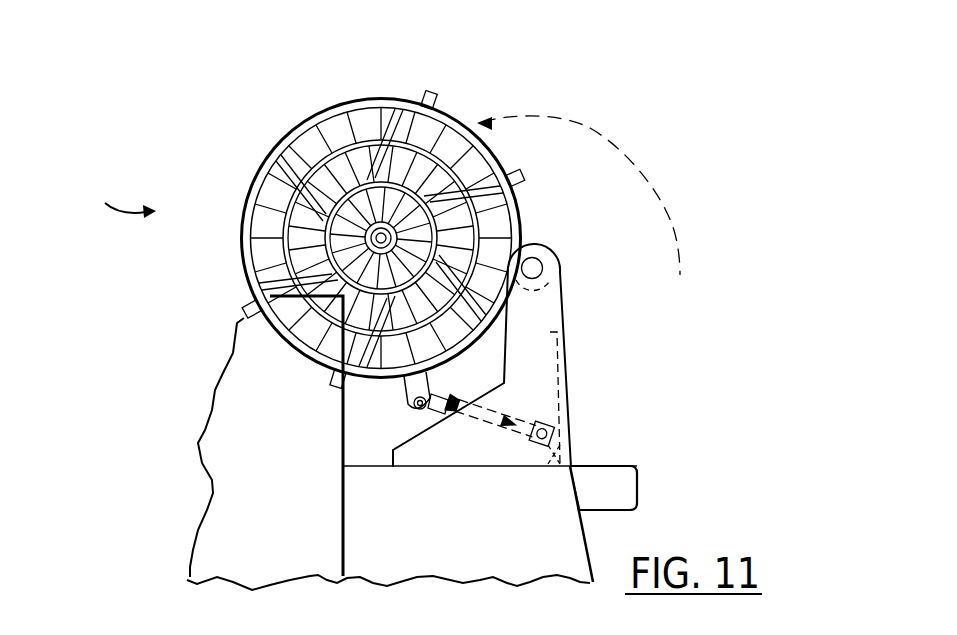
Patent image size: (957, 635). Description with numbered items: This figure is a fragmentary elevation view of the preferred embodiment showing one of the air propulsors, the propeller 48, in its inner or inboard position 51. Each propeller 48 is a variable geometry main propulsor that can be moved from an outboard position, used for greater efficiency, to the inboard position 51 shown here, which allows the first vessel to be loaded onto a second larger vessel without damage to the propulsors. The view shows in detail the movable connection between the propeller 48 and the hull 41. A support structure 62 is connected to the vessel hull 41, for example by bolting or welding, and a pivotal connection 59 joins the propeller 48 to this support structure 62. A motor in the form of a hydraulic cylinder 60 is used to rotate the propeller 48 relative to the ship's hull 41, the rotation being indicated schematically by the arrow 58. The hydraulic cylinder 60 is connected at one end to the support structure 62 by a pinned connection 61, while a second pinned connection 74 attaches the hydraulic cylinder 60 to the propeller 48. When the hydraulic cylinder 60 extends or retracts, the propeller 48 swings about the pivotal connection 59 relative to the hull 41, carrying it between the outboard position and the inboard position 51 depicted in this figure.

The hull 41 is at (305, 540).
The propeller 48 is at (450, 113).
The inboard position 51 is at (121, 192).
The arrow 58 is at (612, 131).
The pivotal connection 59 is at (542, 270).
The hydraulic cylinder 60 is at (498, 433).
The pinned connection 61 is at (530, 478).
The support structure 62 is at (548, 322).
The pinned connection 74 is at (410, 410).